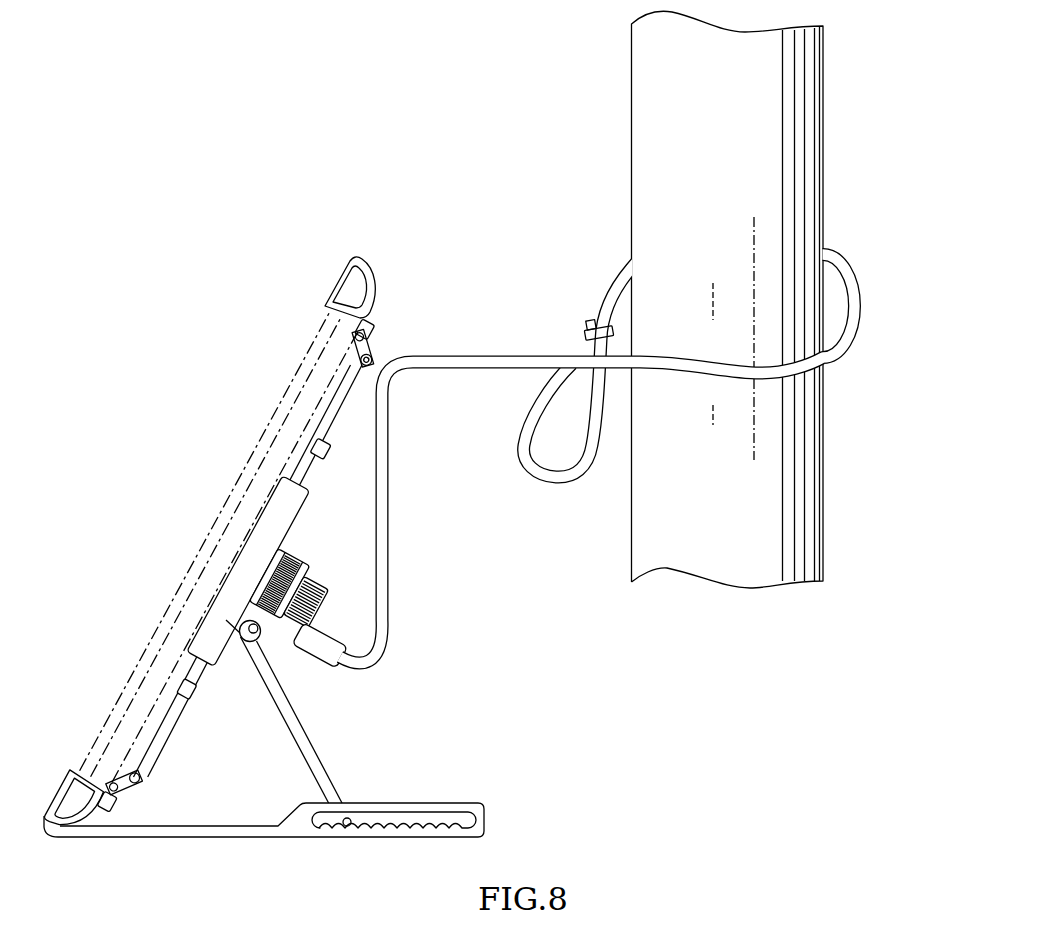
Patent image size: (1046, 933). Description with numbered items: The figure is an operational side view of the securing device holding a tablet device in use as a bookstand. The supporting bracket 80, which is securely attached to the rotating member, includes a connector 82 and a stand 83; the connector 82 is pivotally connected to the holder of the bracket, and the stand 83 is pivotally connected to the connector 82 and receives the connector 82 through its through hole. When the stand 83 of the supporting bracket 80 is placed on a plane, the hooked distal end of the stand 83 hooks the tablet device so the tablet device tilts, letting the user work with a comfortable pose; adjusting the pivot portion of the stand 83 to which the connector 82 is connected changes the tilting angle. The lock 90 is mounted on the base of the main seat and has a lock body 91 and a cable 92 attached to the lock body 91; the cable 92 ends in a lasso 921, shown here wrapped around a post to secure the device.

The supporting bracket 80 is at (503, 797).
The connector 82 is at (303, 742).
The stand 83 is at (298, 818).
The lock 90 is at (322, 576).
The lock body 91 is at (303, 590).
The cable 92 is at (383, 637).
The lasso 921 is at (600, 479).